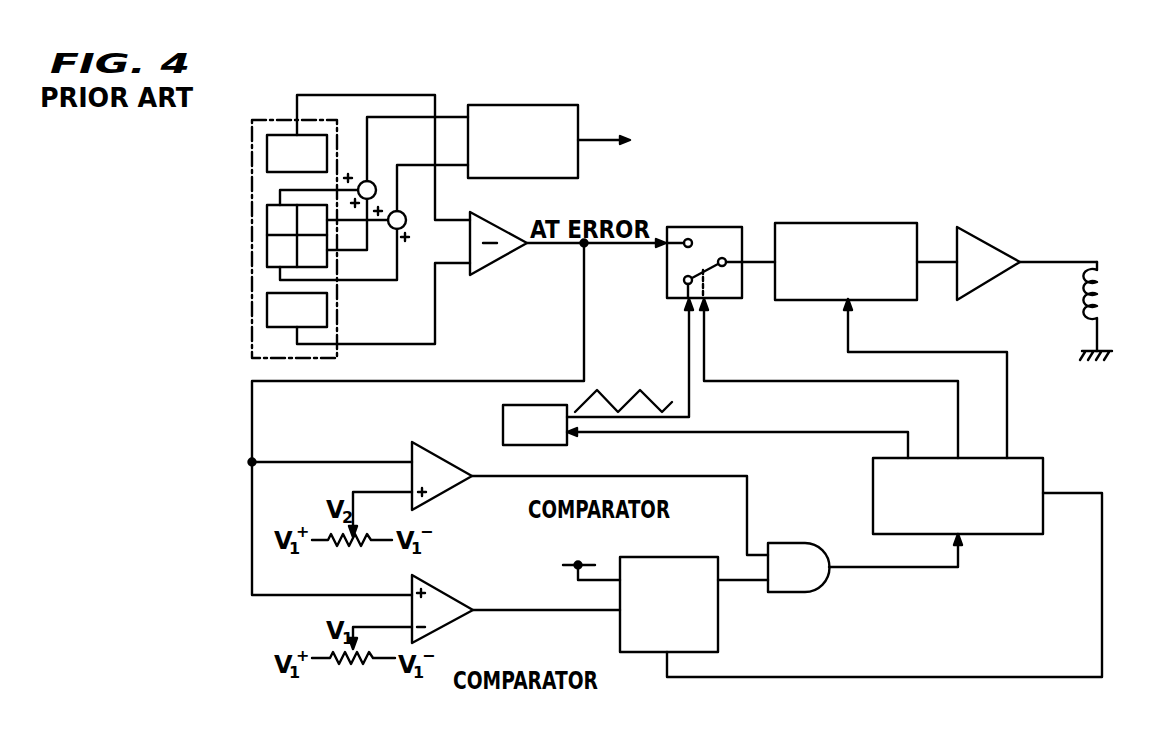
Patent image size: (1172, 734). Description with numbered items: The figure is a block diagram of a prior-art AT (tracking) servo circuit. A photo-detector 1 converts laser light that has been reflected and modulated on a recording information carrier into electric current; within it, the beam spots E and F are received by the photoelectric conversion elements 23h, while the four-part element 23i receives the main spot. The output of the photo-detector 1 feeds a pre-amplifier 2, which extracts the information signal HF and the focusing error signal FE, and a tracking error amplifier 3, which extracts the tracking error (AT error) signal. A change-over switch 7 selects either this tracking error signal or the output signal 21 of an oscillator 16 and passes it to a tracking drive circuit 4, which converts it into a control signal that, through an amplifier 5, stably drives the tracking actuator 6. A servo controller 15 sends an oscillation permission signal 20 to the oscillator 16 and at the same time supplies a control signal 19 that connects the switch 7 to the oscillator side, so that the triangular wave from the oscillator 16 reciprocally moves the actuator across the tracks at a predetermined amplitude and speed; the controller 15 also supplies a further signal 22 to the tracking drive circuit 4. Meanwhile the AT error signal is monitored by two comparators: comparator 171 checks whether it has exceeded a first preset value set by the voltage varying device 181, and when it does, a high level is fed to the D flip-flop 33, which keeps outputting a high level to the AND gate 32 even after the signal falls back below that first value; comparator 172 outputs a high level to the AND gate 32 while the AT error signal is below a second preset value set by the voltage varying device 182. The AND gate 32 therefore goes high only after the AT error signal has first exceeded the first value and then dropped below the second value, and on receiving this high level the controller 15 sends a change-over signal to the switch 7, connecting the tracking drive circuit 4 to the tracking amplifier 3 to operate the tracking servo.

The photo-detector 1 is at (251, 132).
The photoelectric conversion element 23h is at (267, 160).
The four-part photodetector A B C D 23i is at (247, 202).
The pre-amplifier 2 is at (537, 104).
The tracking error amplifier 3 is at (502, 260).
The change-over switch 7 is at (716, 226).
The tracking drive circuit 4 is at (871, 222).
The amplifier 5 is at (983, 238).
The tracking actuator 6 is at (1105, 292).
The servo controller 15 is at (1022, 455).
The oscillator 16 is at (503, 420).
The comparator 172 is at (450, 490).
The comparator 171 is at (447, 626).
The voltage varying device 182 is at (347, 544).
The voltage varying device 181 is at (345, 665).
The control signal 19 is at (707, 339).
The oscillation permission signal 20 is at (622, 433).
The output signal of the oscillator 21 is at (686, 341).
The tracking drive control line 22 is at (846, 342).
The AND gate 32 is at (816, 590).
The D flip-flop circuit 33 is at (719, 624).